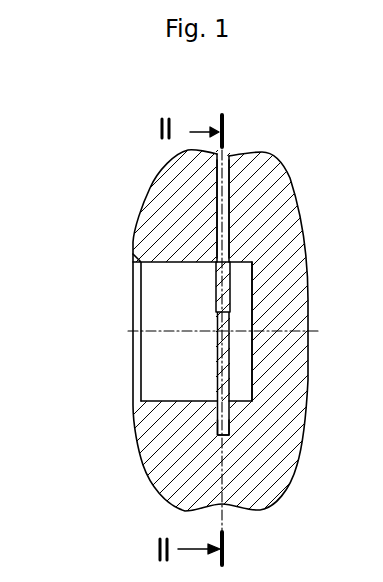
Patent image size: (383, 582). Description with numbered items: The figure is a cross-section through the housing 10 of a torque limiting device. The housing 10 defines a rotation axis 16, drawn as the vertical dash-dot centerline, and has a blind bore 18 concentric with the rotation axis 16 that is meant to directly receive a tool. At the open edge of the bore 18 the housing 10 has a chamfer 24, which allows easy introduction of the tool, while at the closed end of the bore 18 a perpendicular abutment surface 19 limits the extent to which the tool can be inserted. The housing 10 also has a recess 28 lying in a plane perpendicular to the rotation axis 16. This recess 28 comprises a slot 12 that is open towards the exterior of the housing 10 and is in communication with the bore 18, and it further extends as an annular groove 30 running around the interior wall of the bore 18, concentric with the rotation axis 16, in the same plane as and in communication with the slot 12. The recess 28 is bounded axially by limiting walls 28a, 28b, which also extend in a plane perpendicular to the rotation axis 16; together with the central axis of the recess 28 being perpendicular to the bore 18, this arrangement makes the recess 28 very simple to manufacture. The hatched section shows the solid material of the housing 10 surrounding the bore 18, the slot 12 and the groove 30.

The housing 10 is at (146, 203).
The slot 12 is at (230, 224).
The rotation axis 16 is at (168, 335).
The blind bore 18 is at (162, 303).
The abutment surface 19 is at (253, 293).
The chamfer 24 is at (133, 261).
The recess 28 is at (226, 152).
The axially limiting wall 28a is at (290, 166).
The axially limiting wall 28b is at (215, 183).
The annular groove 30 is at (218, 417).